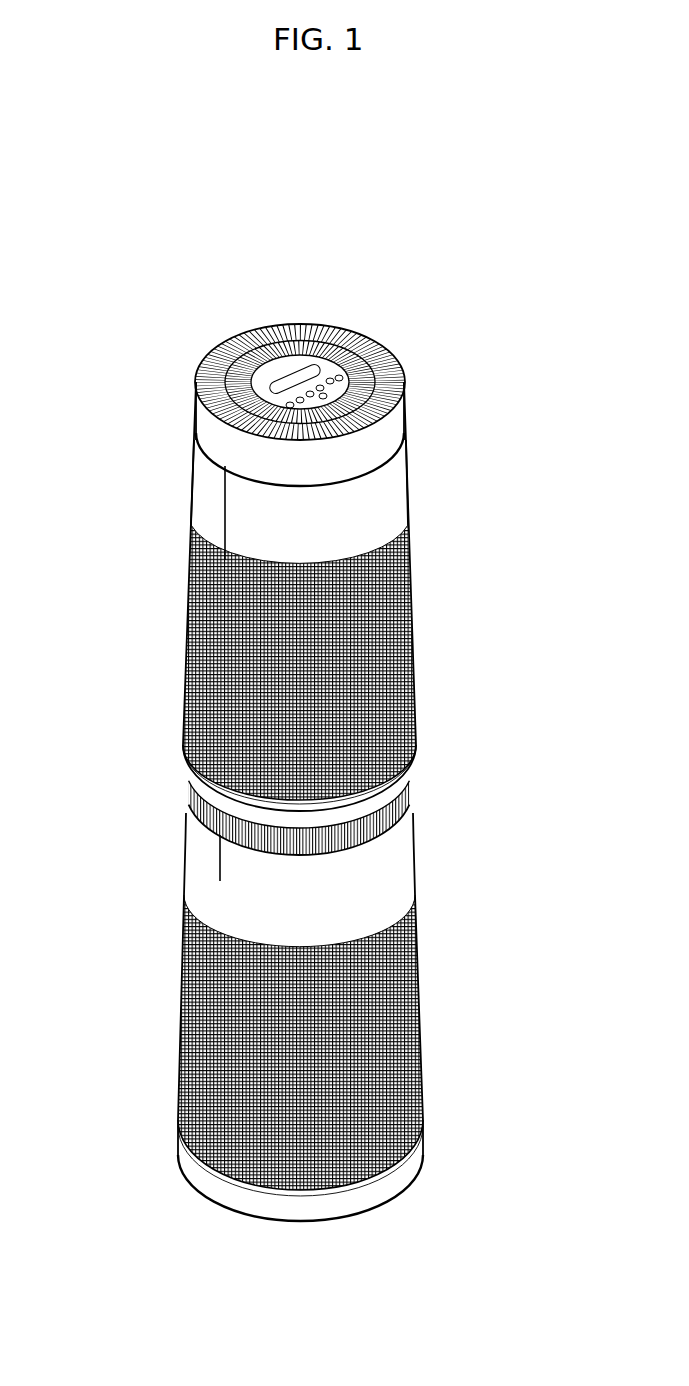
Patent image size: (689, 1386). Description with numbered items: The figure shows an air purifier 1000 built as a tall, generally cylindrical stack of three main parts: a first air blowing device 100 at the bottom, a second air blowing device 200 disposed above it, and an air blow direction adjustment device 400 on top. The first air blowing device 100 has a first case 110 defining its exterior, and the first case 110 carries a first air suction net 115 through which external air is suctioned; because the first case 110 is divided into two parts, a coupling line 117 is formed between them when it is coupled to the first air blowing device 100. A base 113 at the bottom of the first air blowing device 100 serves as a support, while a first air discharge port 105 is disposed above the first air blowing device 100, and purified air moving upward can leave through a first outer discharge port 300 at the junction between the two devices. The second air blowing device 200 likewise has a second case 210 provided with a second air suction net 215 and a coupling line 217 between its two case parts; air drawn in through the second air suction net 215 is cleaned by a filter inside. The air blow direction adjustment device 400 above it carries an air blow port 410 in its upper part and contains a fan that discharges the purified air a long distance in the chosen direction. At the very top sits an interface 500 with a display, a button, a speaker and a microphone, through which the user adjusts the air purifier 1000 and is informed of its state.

The air purifier 1000 is at (484, 240).
The first air blowing device 100 is at (420, 950).
The first air discharge port 105 is at (402, 807).
The first case 110 is at (393, 853).
The base 113 is at (390, 1168).
The first air suction net 115 is at (413, 1036).
The coupling line 117 is at (212, 873).
The second air blowing device 200 is at (414, 583).
The second case 210 is at (387, 483).
The second air suction net 215 is at (404, 665).
The coupling line 217 is at (217, 507).
The first outer discharge port 300 is at (154, 762).
The air blow direction adjustment device 400 is at (206, 316).
The air blow port 410 is at (190, 353).
The interface 500 is at (281, 352).